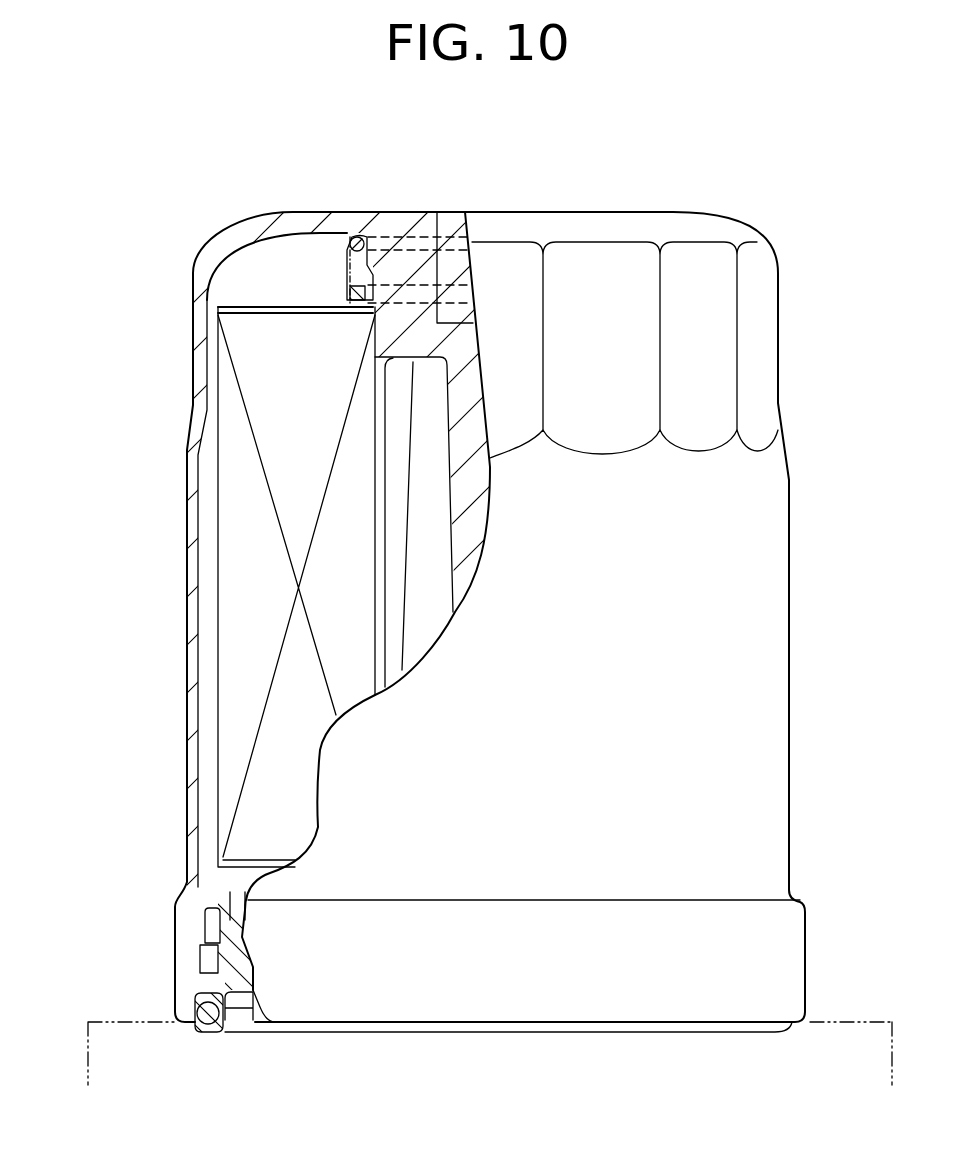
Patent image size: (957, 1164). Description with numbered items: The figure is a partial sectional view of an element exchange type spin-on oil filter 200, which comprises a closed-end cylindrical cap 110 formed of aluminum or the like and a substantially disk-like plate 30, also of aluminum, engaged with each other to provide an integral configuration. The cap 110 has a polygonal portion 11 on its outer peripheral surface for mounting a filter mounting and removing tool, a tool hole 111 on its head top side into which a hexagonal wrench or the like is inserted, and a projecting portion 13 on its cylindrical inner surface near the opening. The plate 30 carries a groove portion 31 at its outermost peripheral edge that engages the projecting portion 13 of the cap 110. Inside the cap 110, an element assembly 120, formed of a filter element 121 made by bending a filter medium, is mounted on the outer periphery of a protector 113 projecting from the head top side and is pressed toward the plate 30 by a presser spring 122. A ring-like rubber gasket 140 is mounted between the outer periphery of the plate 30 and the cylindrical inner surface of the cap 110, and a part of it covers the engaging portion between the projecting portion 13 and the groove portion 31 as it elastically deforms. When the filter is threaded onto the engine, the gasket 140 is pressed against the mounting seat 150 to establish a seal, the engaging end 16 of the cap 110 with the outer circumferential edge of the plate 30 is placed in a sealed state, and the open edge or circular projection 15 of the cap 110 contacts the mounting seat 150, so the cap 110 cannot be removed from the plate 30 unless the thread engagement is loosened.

The element exchange type spin-on oil filter 200 is at (202, 237).
The polygonal portion 11 is at (578, 260).
The tool hole 111 is at (466, 212).
The presser spring 122 is at (356, 238).
The element assembly 120 is at (212, 488).
The filter element 121 is at (240, 537).
The cap 110 is at (193, 597).
The protector 113 is at (395, 577).
The projecting portion 13 is at (207, 917).
The groove portion 31 is at (208, 957).
The mounting seat 150 is at (135, 1020).
The open edge or circular projection 15 is at (182, 1023).
The gasket 140 is at (203, 1030).
The engaging end 16 is at (214, 1026).
The plate 30 is at (257, 992).